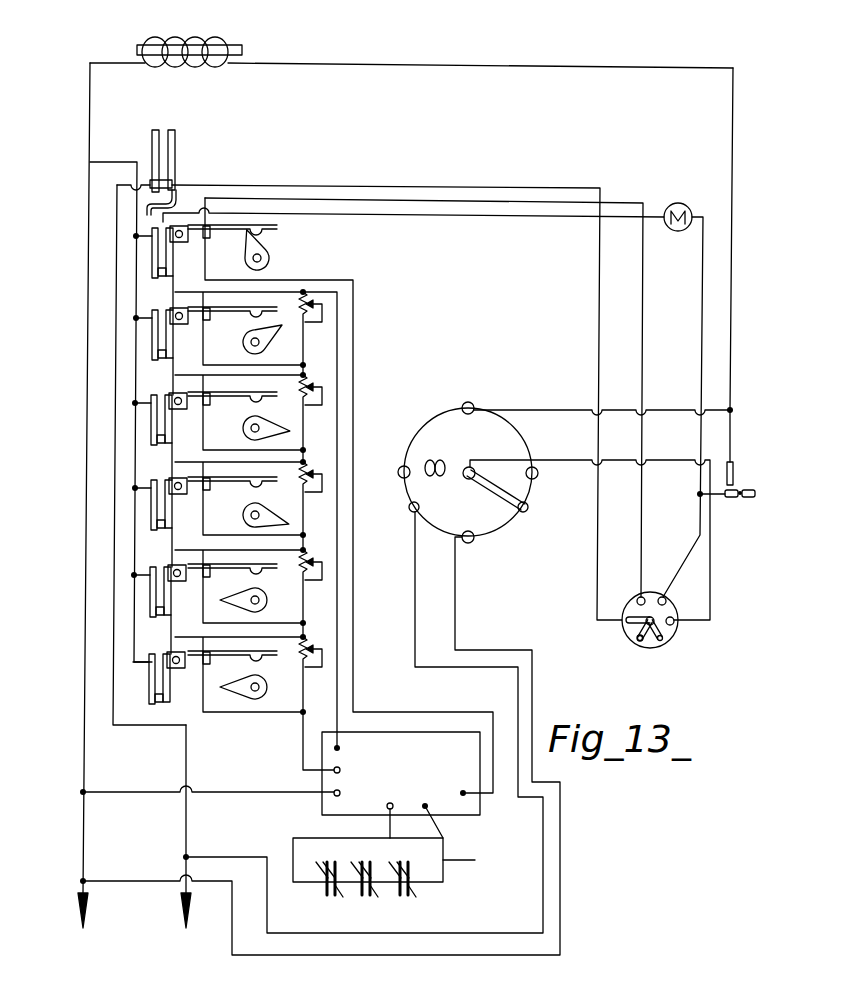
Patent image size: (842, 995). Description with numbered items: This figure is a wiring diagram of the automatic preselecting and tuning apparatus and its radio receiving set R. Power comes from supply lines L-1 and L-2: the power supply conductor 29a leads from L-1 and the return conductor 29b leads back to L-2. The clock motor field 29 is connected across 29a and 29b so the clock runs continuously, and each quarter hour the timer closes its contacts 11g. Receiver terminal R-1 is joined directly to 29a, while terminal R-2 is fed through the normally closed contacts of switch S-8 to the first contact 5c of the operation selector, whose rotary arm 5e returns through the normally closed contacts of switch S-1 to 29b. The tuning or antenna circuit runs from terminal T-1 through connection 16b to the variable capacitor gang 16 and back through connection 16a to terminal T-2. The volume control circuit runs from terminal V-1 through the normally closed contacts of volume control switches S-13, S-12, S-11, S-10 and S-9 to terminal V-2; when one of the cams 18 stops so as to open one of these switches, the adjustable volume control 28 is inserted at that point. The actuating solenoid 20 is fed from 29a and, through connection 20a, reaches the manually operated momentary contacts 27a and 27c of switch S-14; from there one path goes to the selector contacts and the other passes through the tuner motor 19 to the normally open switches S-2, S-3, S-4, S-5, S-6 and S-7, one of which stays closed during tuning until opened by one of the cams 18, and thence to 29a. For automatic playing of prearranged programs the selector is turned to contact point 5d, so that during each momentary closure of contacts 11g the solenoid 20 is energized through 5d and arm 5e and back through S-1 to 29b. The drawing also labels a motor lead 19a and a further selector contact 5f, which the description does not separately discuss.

The actuating solenoid 20 is at (188, 38).
The solenoid circuit connection 20a is at (733, 140).
The tuner motor 19 is at (680, 203).
The motor conductor 19a is at (700, 325).
The normally closed switch S-1 is at (152, 150).
The normally open tuning switch S-2 is at (150, 270).
The normally open tuning switch S-3 is at (150, 355).
The normally open tuning switch S-4 is at (150, 433).
The normally open tuning switch S-5 is at (150, 522).
The normally open tuning switch S-6 is at (150, 607).
The normally open tuning switch S-7 is at (150, 695).
The normally closed switch S-8 is at (212, 232).
The volume control switch S-9 is at (212, 318).
The volume control switch S-10 is at (212, 403).
The volume control switch S-11 is at (212, 488).
The volume control switch S-12 is at (212, 575).
The volume control switch S-13 is at (212, 660).
The momentary contact switch S-14 is at (730, 511).
The volume control 28 is at (305, 380).
The cams 18 is at (290, 432).
The clock coil 29 is at (476, 479).
The timer contacts 11g is at (542, 528).
The momentary contact 27c is at (737, 470).
The momentary contact 27a is at (757, 492).
The first selector contact 5c is at (638, 596).
The selector contact point 5d is at (677, 628).
The rotary control arm 5e is at (632, 636).
The contact 5f is at (668, 601).
The radio receiving set R is at (401, 773).
The volume control terminal V-1 is at (353, 772).
The volume control terminal V-2 is at (353, 749).
The receiver power terminal R-1 is at (352, 801).
The receiver power terminal R-2 is at (465, 796).
The tuning circuit terminal T-1 is at (392, 811).
The tuning circuit terminal T-2 is at (432, 811).
The power supply conductor 29a is at (260, 780).
The return conductor 29b is at (192, 827).
The variable capacitor gang 16 is at (400, 893).
The capacitor connection 16a is at (478, 872).
The capacitor connection 16b is at (318, 837).
The supply line L-1 is at (83, 922).
The supply line L-2 is at (185, 928).